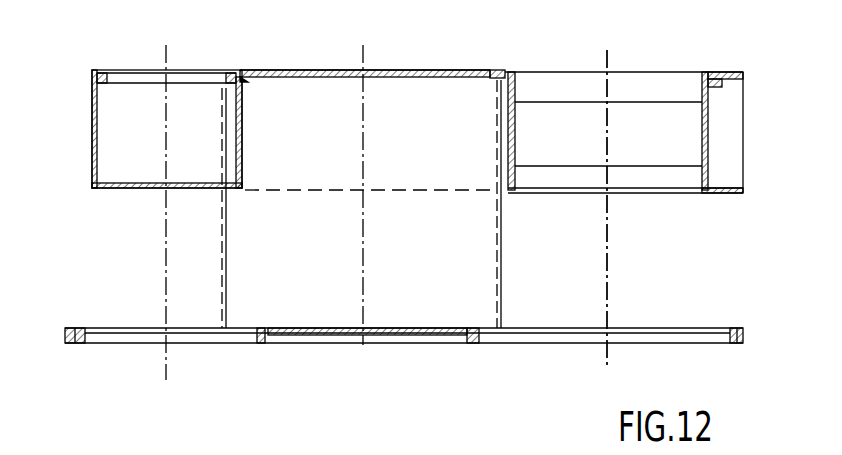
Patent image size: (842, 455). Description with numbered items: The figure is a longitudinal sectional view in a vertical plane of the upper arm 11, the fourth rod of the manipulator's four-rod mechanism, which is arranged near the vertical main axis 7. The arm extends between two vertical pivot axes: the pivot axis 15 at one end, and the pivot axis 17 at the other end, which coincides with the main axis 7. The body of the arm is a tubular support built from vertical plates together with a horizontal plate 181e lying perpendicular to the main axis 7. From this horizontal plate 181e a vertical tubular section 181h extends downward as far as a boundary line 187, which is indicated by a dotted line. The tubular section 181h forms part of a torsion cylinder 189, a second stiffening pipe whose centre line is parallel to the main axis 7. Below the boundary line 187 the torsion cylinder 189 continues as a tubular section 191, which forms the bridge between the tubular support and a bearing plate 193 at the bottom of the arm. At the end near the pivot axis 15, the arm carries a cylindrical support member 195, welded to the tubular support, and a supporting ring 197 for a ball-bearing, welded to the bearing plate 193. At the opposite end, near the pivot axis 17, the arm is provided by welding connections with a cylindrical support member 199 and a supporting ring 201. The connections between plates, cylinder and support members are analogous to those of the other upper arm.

The upper arm 11 is at (285, 66).
The pivot axis 15 is at (166, 280).
The main axis 7 is at (607, 258).
The pivot axis 17 is at (607, 258).
The horizontal plate 181e is at (396, 70).
The vertical tubular section 181h is at (453, 112).
The boundary line 187 is at (318, 193).
The torsion cylinder 189 is at (222, 232).
The tubular section 191 is at (478, 287).
The bearing plate 193 is at (412, 328).
The cylindrical support member 195 is at (92, 106).
The supporting ring 197 is at (85, 334).
The cylindrical support member 199 is at (702, 118).
The supporting ring 201 is at (726, 340).